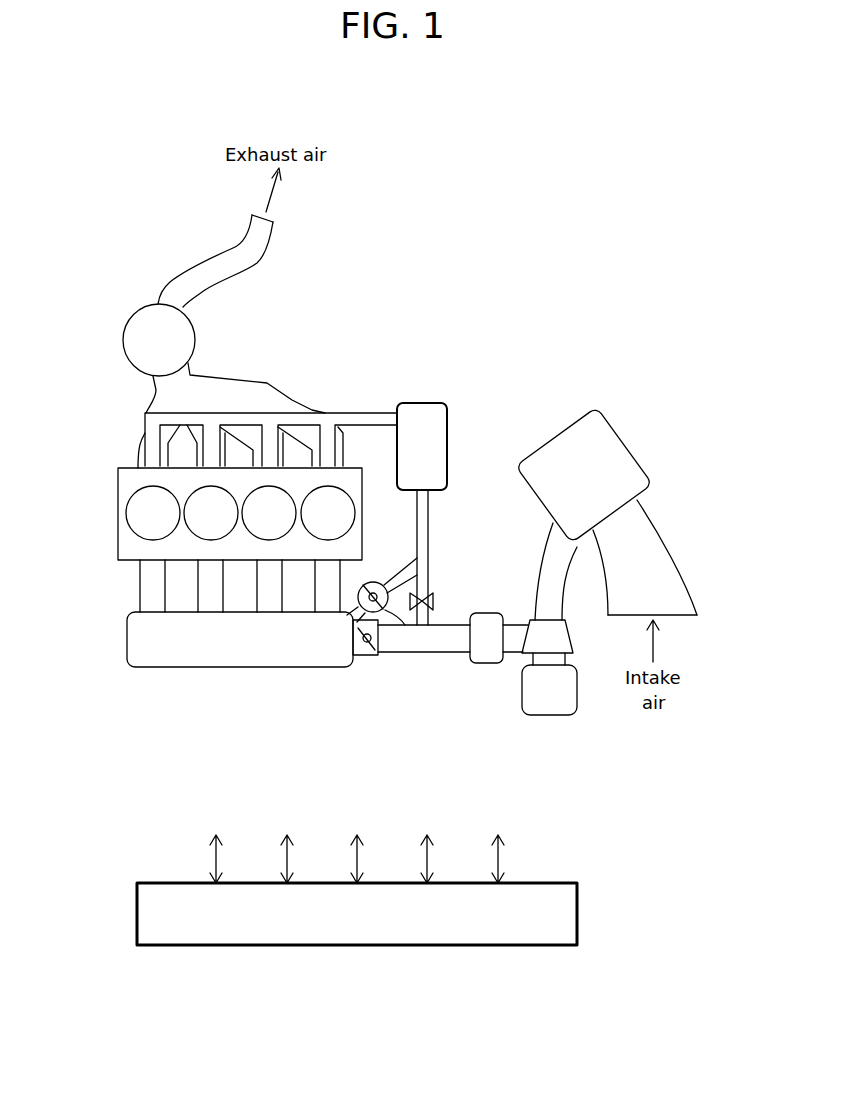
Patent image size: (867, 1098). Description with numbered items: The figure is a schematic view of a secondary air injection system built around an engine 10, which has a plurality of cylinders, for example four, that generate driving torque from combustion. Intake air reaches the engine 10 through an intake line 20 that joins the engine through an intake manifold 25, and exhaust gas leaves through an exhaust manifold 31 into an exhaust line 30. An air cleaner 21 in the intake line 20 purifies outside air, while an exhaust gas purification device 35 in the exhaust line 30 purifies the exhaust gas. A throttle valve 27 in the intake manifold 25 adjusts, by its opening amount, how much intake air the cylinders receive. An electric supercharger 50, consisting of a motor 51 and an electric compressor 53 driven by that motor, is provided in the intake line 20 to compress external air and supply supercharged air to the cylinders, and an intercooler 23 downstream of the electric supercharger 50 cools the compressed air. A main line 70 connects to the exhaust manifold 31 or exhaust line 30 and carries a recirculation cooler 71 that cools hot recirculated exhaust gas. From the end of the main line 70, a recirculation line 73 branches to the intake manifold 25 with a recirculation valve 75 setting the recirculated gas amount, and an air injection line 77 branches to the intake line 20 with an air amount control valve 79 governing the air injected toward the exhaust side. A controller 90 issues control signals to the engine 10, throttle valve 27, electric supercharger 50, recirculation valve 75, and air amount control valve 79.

The engine 10 is at (106, 528).
The intake line 20 is at (542, 553).
The air cleaner 21 is at (628, 442).
The intercooler 23 is at (487, 664).
The intake manifold 25 is at (238, 668).
The throttle valve 27 is at (368, 656).
The exhaust line 30 is at (263, 259).
The exhaust manifold 31 is at (243, 377).
The exhaust gas purification device 35 is at (128, 318).
The electric supercharger 50 is at (653, 780).
The motor 51 is at (588, 727).
The electric compressor 53 is at (585, 641).
The main line 70 is at (352, 412).
The recirculation cooler 71 is at (418, 402).
The recirculation line 73 is at (410, 566).
The recirculation valve 75 is at (390, 611).
The air injection line 77 is at (428, 576).
The air amount control valve 79 is at (434, 602).
The controller 90 is at (105, 915).